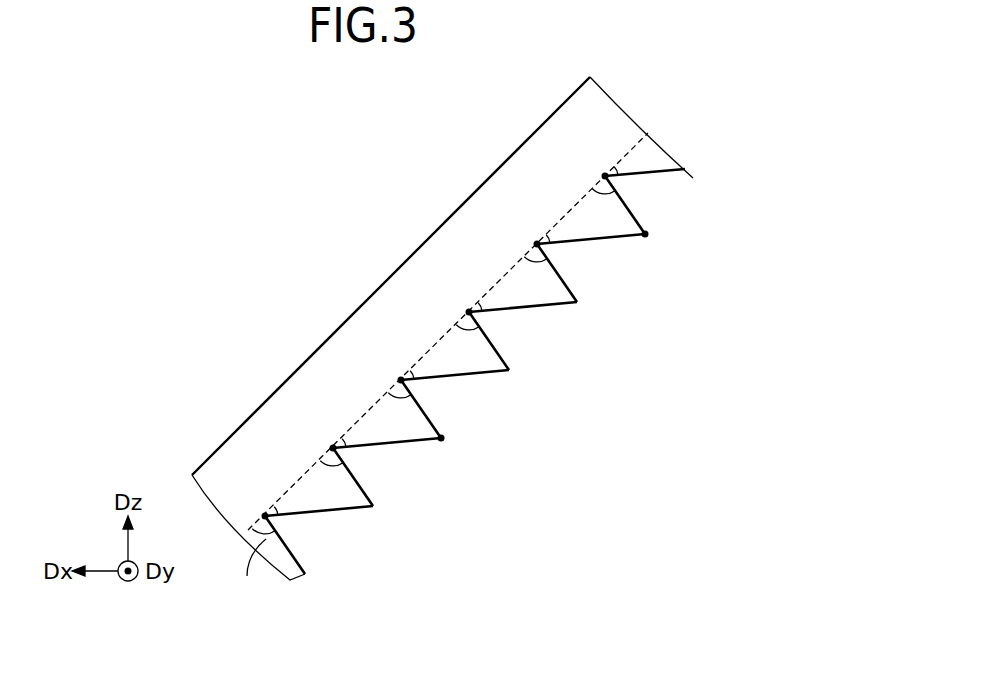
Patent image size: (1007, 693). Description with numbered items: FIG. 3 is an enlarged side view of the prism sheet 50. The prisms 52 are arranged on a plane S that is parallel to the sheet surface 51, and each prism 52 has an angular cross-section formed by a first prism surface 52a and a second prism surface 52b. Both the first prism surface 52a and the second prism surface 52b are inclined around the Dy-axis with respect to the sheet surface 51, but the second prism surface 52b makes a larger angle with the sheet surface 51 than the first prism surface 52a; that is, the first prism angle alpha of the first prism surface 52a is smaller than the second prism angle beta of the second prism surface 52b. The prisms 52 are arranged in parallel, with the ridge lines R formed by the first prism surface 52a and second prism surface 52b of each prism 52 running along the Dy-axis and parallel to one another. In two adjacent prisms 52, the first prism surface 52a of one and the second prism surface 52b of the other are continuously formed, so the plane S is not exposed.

The prism sheet 50 is at (287, 143).
The sheet surface 51 is at (257, 411).
The prisms 52 is at (491, 343).
The first prism surface 52a is at (410, 442).
The second prism surface 52b is at (503, 361).
The plane S is at (572, 207).
The ridge lines R is at (645, 234).